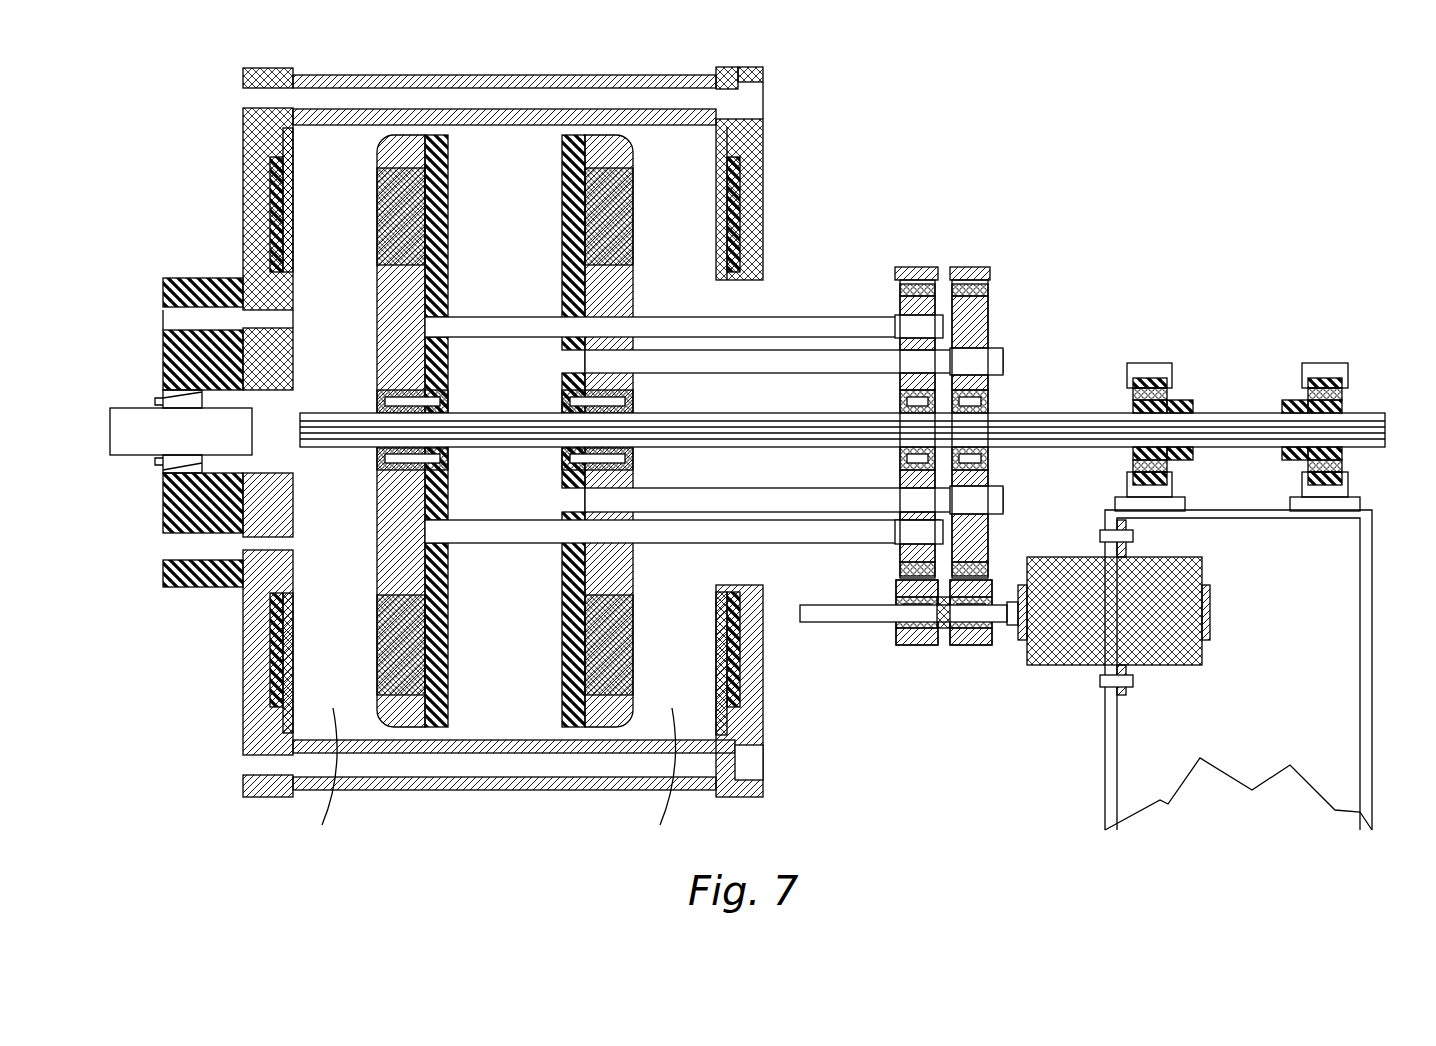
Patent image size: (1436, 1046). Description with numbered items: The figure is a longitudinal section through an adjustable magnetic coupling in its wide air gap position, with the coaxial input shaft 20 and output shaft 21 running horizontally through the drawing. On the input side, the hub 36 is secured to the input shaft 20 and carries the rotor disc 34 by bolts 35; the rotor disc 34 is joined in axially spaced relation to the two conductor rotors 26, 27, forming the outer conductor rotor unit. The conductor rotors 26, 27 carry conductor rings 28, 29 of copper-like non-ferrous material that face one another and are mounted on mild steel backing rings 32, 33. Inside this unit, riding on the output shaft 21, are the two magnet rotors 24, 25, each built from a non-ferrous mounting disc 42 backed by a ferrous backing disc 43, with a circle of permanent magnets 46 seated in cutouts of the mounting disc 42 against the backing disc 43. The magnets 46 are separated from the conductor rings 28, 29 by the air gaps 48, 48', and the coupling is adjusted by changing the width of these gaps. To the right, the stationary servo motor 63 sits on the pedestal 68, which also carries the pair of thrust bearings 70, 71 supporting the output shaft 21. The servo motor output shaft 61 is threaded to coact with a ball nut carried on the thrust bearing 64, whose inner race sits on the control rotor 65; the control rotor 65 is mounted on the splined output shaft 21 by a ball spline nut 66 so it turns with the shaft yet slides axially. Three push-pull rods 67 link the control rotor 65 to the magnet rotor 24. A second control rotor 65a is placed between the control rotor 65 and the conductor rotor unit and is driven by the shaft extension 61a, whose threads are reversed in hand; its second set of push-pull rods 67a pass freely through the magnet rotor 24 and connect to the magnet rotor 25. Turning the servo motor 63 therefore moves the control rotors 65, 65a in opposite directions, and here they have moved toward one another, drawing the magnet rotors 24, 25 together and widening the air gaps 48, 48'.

The input shaft 20 is at (135, 410).
The output shaft 21 is at (1385, 430).
The magnet rotor 24 is at (629, 431).
The magnet rotor 25 is at (402, 429).
The conductor rotor 26 is at (773, 677).
The conductor rotor 27 is at (226, 656).
The conductor ring 28 is at (718, 157).
The conductor ring 29 is at (286, 192).
The backing ring 32 is at (718, 222).
The backing ring 33 is at (292, 252).
The rotor disc 34 is at (247, 126).
The bolts 35 is at (175, 318).
The hub 36 is at (190, 282).
The mounting disc 42 is at (377, 157).
The backing disc 43 is at (448, 172).
The permanent magnets 46 is at (634, 654).
The air gap 48 is at (662, 784).
The air gap 48' is at (325, 784).
The output shaft of servo motor 61 is at (1015, 627).
The outer section of servo motor shaft 61a is at (882, 622).
The servo motor 63 is at (1188, 665).
The thrust bearing 64 is at (984, 572).
The control rotor 65 is at (988, 318).
The second control rotor 65a is at (902, 308).
The ball spline nut 66 is at (988, 406).
The push-pull rods 67 is at (786, 372).
The second set of push-pull rods 67a is at (706, 320).
The pedestal 68 is at (1118, 766).
The thrust bearing 70 is at (1188, 403).
The thrust bearing 71 is at (1342, 395).